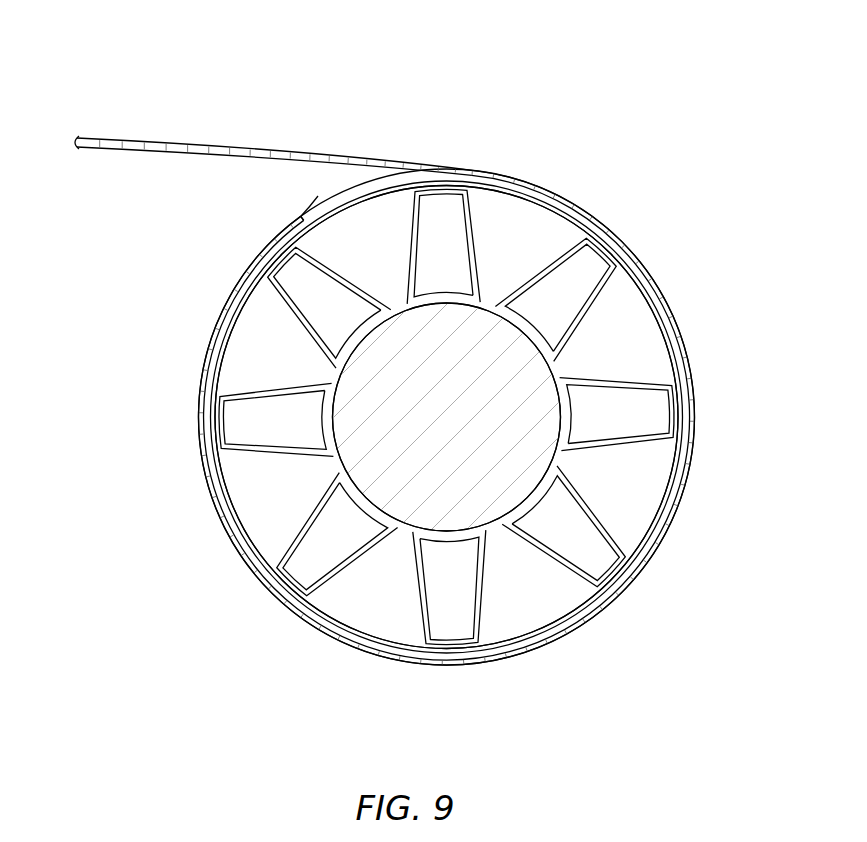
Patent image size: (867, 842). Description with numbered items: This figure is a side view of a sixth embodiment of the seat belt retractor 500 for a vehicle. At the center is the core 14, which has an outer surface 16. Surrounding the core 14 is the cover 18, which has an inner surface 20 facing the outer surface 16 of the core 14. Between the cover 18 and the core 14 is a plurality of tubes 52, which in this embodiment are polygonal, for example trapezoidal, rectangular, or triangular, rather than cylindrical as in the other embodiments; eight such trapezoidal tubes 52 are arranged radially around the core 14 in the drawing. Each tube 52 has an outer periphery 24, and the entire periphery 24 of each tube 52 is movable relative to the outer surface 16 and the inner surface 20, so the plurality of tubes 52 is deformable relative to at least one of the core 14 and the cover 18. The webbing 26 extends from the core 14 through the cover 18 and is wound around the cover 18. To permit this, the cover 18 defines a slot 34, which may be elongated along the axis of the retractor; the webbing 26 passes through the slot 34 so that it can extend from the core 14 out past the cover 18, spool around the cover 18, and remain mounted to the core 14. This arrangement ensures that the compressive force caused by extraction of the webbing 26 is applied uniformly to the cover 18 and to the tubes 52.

The seat belt retractor 500 is at (722, 143).
The core 14 is at (437, 429).
The outer surface 16 is at (337, 460).
The cover 18 is at (403, 188).
The inner surface 20 is at (555, 208).
The outer periphery 24 is at (543, 272).
The webbing 26 is at (155, 142).
The slot 34 is at (307, 226).
The tube 52 is at (410, 227).